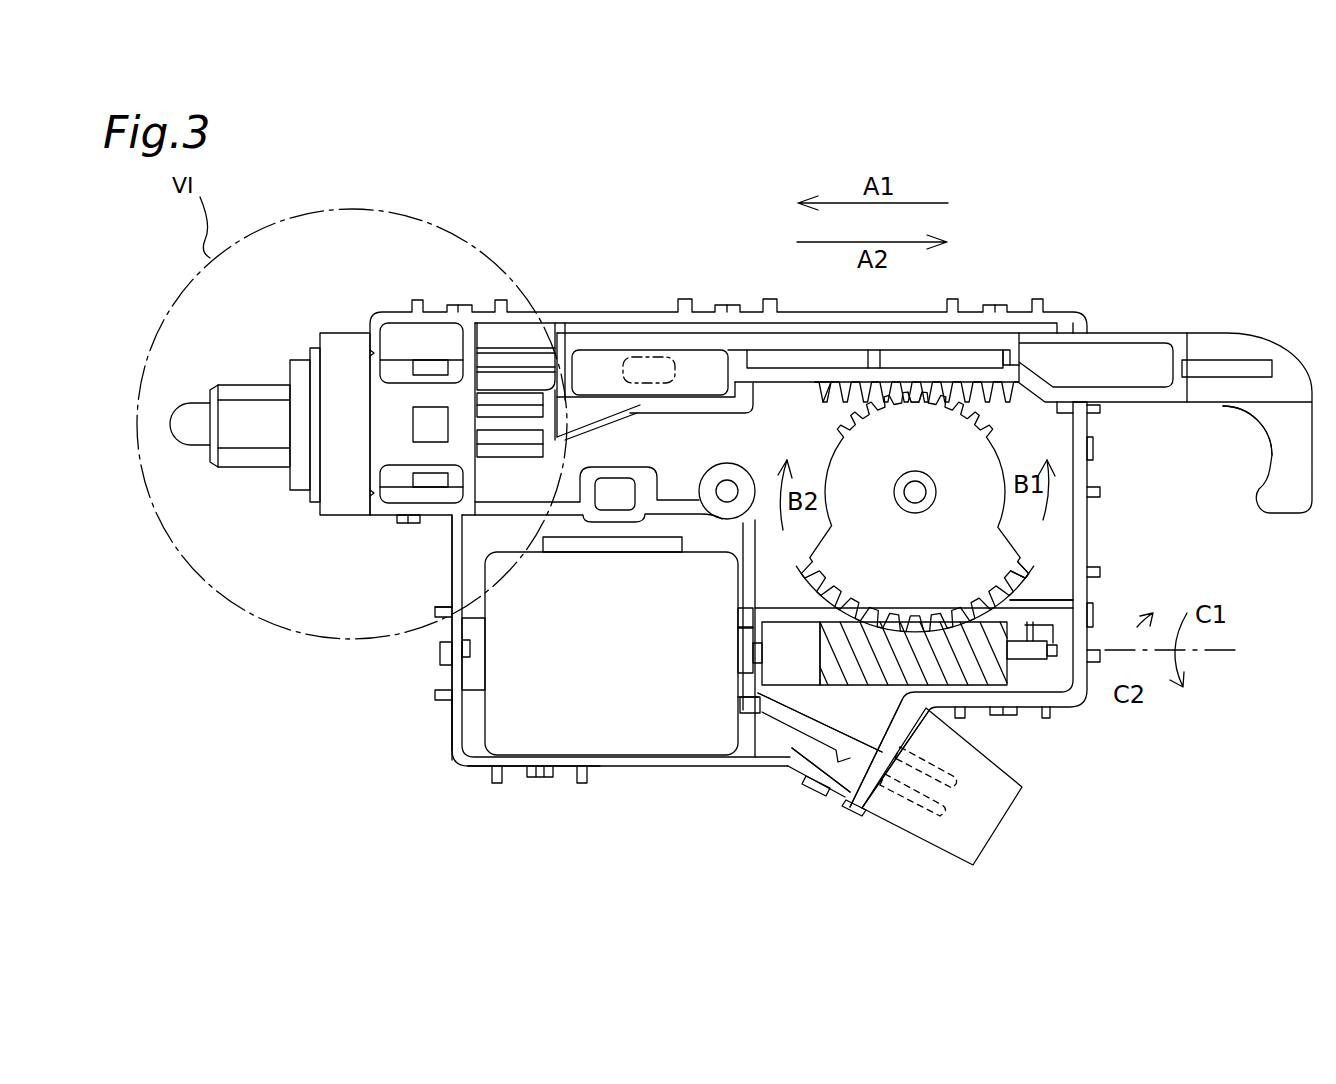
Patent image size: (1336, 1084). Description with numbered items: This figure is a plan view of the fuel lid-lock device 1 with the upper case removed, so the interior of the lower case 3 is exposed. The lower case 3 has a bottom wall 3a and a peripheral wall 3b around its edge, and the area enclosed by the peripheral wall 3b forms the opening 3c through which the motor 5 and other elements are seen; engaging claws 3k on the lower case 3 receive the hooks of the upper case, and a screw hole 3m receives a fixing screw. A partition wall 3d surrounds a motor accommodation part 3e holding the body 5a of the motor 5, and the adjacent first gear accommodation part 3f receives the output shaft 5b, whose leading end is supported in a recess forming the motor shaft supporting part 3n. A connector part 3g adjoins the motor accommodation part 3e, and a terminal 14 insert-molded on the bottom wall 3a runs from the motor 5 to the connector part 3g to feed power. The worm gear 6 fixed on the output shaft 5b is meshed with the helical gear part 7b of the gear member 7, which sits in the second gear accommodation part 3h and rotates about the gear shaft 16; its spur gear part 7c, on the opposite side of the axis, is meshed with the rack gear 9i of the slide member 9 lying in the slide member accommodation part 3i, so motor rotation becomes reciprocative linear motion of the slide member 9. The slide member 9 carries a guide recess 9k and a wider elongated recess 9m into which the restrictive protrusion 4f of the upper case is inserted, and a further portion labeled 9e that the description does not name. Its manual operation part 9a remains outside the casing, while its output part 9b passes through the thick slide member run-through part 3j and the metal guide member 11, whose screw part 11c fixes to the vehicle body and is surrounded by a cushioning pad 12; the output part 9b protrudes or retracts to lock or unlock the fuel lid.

The drive device 1 is at (1272, 162).
The lower case 3 is at (1082, 316).
The bottom wall 3a is at (472, 725).
The peripheral wall 3b is at (475, 767).
The opening 3c is at (470, 695).
The partition wall 3d is at (672, 505).
The motor accommodation part 3e is at (470, 570).
The first gear accommodation part 3f is at (773, 733).
The connector part 3g is at (927, 832).
The second gear accommodation part 3h is at (1057, 597).
The slide member accommodation part 3i is at (538, 390).
The slide member run-through part 3j is at (373, 345).
The engaging claws 3k is at (455, 306).
The screw hole 3m is at (727, 487).
The motor shaft supporting part 3n is at (1048, 648).
The restrictive protrusion 4f is at (676, 384).
The motor 5 is at (643, 755).
The body 5a is at (700, 757).
The output shaft 5b is at (1035, 655).
The worm gear 6 is at (980, 680).
The gear member 7 is at (1008, 508).
The helical gear part 7b is at (1025, 592).
The spur gear part 7c is at (968, 405).
The slide member 9 is at (1185, 330).
The manual operation part 9a is at (1277, 465).
The output part 9b is at (200, 440).
The rack arm window 9e is at (1128, 343).
The rack gear 9i is at (837, 380).
The guide recess 9k is at (827, 360).
The elongated recess 9m is at (600, 362).
The guide member 11 is at (237, 378).
The screw part 11c is at (255, 460).
The pad 12 is at (298, 365).
The terminal 14 is at (853, 760).
The gear shaft 16 is at (925, 492).